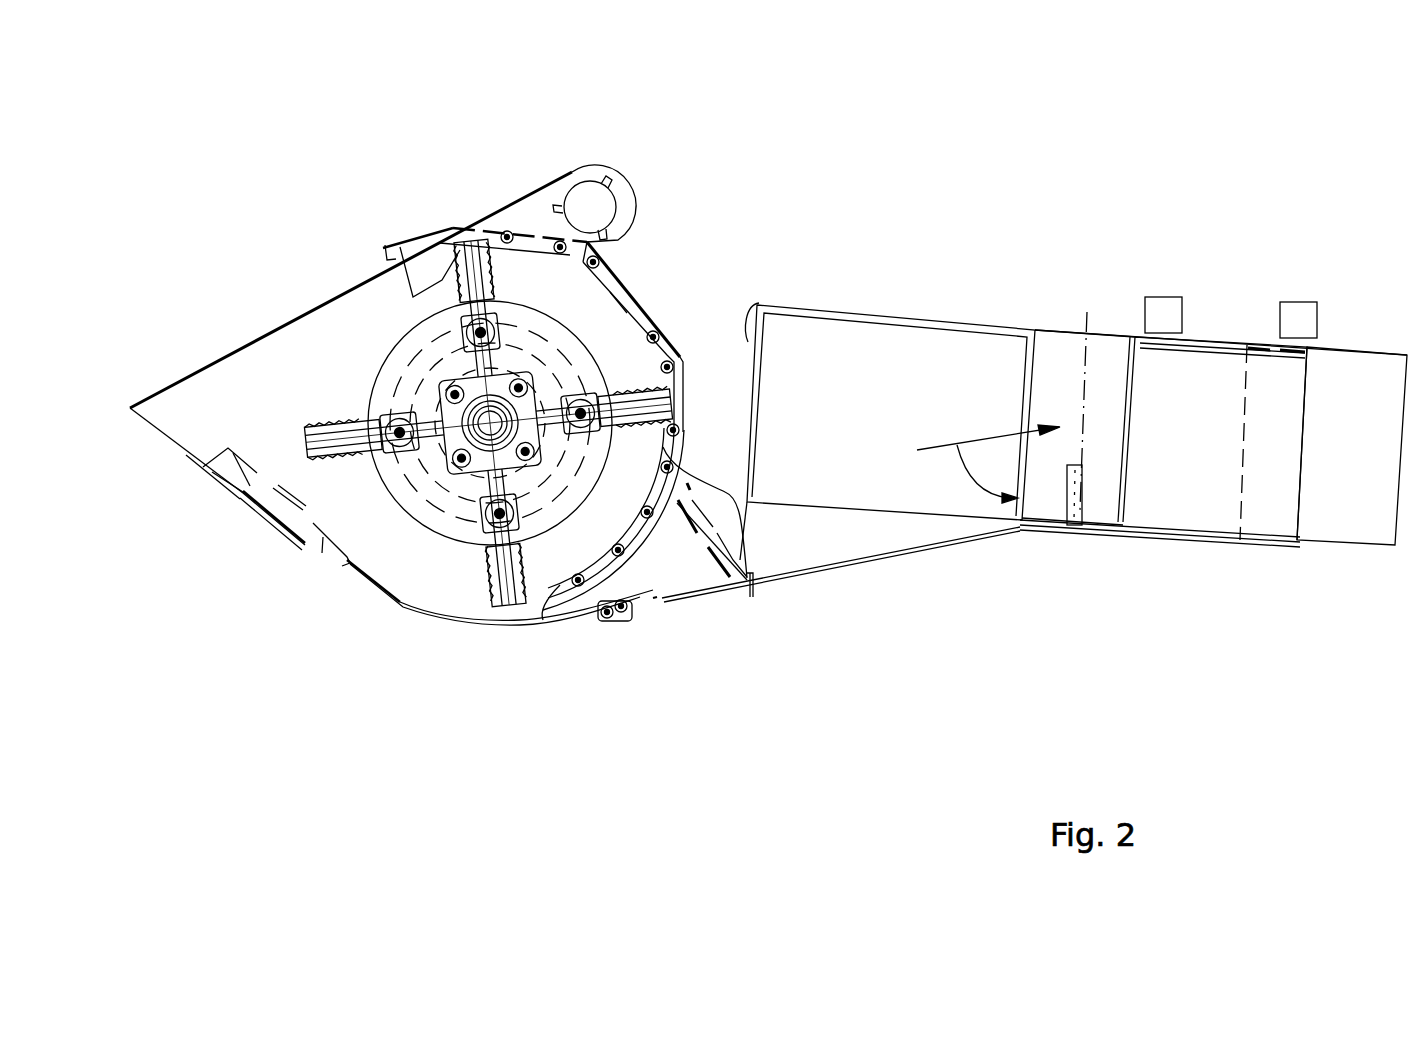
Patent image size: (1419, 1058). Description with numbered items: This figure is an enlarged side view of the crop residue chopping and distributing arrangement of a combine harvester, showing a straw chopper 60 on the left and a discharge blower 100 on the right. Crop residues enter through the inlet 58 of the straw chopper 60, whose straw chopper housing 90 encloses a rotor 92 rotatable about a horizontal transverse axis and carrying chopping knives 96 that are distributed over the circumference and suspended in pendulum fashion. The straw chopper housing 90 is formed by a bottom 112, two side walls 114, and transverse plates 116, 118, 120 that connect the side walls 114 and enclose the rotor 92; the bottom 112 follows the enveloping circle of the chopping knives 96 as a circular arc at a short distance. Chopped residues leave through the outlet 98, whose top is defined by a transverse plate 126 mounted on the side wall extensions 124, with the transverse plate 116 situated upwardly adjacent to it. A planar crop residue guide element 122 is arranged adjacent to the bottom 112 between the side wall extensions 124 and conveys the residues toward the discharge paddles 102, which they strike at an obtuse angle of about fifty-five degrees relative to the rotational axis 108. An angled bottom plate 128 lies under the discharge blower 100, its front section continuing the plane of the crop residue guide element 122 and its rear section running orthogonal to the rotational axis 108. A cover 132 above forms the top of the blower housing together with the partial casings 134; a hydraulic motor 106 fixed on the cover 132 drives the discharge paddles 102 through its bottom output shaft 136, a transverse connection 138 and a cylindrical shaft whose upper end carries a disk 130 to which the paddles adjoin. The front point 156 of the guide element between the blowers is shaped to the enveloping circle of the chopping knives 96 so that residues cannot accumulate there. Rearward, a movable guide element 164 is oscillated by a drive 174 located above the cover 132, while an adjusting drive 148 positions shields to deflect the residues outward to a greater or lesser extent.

The inlet 58 is at (286, 365).
The straw chopper 60 is at (502, 685).
The straw chopper housing 90 is at (685, 360).
The rotor 92 is at (522, 343).
The chopping knives 96 is at (630, 448).
The outlet 98 is at (615, 573).
The discharge blowers 100 is at (1167, 592).
The discharge paddles 102 is at (1200, 458).
The hydraulic motor 106 is at (1100, 444).
The rotational axis 108 is at (1077, 422).
The bottom 112 is at (522, 618).
The side walls 114 is at (310, 357).
The transverse plate 116 is at (693, 362).
The transverse plate 118 is at (637, 293).
The transverse plate 120 is at (257, 510).
The crop residue guide element 122 is at (680, 593).
The side wall extensions 124 is at (637, 570).
The transverse plate 126 is at (680, 473).
The bottom plate 128 is at (940, 543).
The disk 130 is at (1223, 347).
The cover 132 is at (850, 312).
The partial casings 134 is at (747, 340).
The bottom output shaft 136 is at (1083, 527).
The transverse connection 138 is at (1042, 528).
The adjusting drive 148 is at (1163, 312).
The front point 156 is at (632, 540).
The movable guide element 164 is at (1363, 363).
The drive 174 is at (1298, 316).